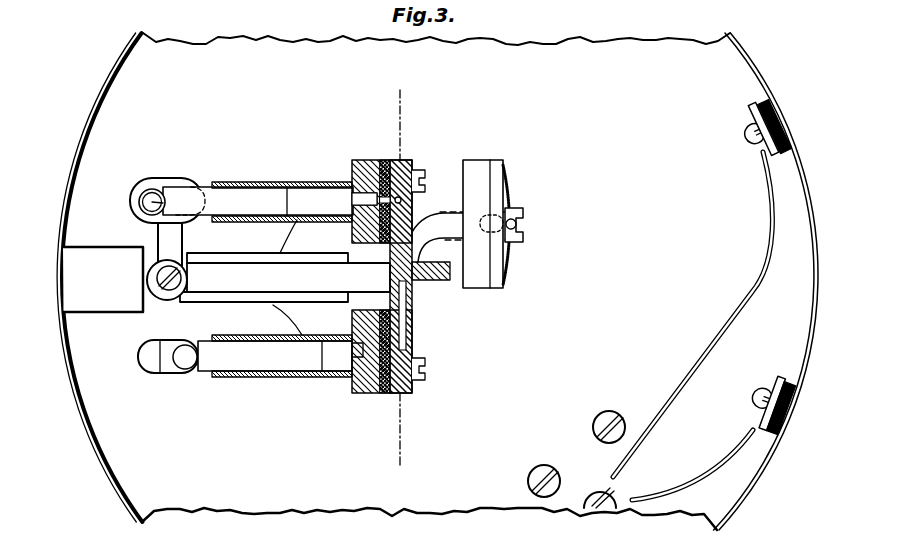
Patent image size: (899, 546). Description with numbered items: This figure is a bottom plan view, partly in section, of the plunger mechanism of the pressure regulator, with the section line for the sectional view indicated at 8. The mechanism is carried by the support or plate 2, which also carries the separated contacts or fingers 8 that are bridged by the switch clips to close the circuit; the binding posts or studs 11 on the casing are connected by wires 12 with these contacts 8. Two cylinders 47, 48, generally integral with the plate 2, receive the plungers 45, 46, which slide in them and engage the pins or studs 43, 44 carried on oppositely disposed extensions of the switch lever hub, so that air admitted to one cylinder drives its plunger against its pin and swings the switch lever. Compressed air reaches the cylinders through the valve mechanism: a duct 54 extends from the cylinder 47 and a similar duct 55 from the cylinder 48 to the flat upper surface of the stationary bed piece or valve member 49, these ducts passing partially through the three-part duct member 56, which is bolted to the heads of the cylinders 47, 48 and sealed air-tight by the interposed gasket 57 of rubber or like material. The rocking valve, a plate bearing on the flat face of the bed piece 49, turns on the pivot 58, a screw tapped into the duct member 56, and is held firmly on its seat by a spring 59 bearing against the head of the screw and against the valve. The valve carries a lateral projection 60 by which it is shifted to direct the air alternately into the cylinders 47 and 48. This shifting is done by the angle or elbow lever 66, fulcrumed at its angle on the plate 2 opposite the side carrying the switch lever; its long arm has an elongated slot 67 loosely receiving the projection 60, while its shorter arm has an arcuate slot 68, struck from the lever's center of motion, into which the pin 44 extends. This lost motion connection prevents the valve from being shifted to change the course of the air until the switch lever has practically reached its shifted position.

The support or plate 2 is at (180, 490).
The contacts or fingers 8 is at (399, 277).
The binding posts or studs 11 is at (748, 132).
The wires 12 is at (688, 480).
The pin or stud 43 is at (148, 355).
The pin or stud 44 is at (191, 196).
The plunger 45 is at (242, 357).
The plunger 46 is at (253, 198).
The cylinder 47 is at (342, 357).
The cylinder 48 is at (317, 198).
The bed piece or valve member 49 is at (477, 170).
The duct 54 is at (402, 341).
The duct 55 is at (375, 198).
The three-part duct member 56 is at (405, 393).
The gasket 57 is at (382, 162).
The pivot 58 is at (522, 213).
The spring 59 is at (512, 262).
The lateral projection 60 is at (497, 217).
The angle or elbow lever 66 is at (260, 240).
The elongated slot 67 is at (523, 228).
The arcuate slot 68 is at (170, 191).